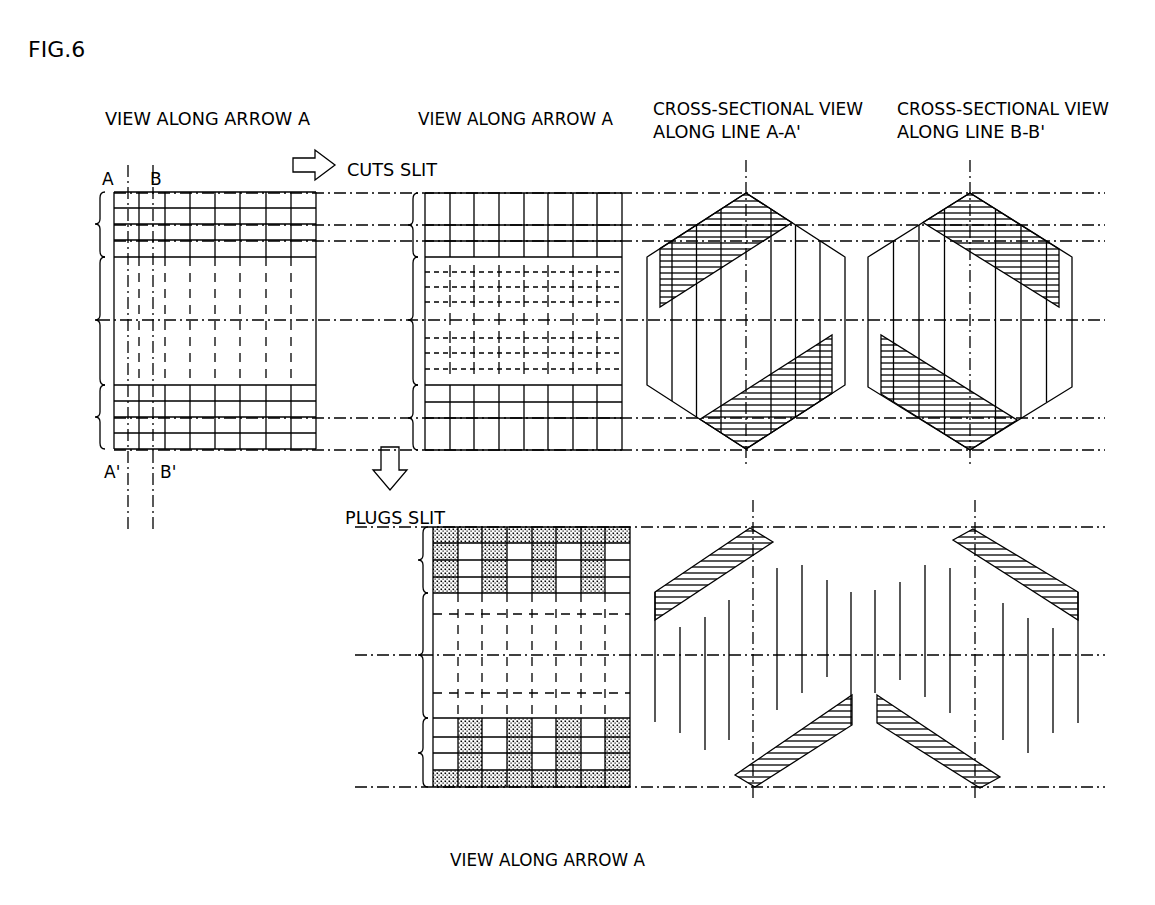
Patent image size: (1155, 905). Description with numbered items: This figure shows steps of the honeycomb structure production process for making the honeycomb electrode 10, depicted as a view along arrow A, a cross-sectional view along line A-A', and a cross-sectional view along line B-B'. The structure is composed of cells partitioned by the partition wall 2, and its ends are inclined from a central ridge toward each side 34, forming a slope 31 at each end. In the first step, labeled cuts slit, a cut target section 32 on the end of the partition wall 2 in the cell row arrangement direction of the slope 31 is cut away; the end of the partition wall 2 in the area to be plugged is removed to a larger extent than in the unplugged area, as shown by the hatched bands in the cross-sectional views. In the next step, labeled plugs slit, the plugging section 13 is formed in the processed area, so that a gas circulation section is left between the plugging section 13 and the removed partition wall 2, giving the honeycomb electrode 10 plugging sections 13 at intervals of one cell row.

The partition wall 2 is at (452, 207).
The honeycomb electrode 10 is at (605, 519).
The plugging section 13 is at (512, 527).
The slope 31 is at (1043, 174).
The cut target section 32 is at (198, 193).
The side 34 is at (250, 487).